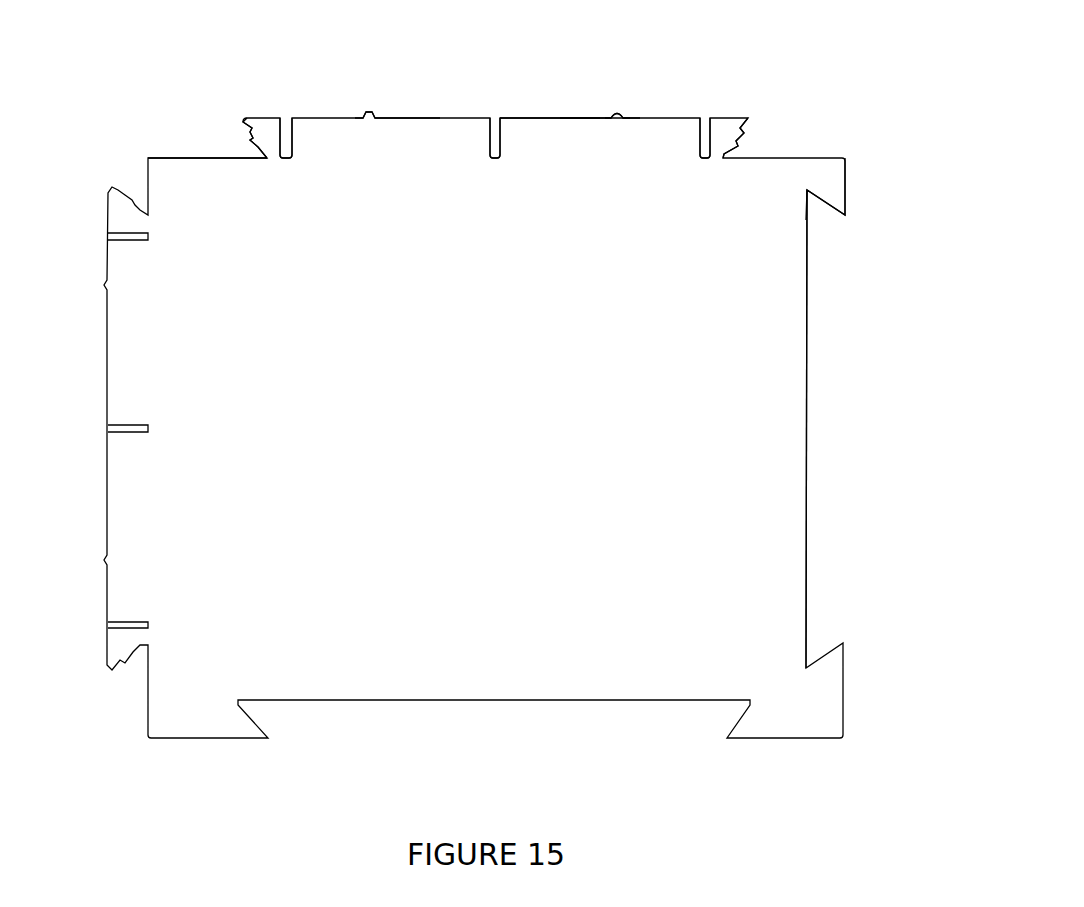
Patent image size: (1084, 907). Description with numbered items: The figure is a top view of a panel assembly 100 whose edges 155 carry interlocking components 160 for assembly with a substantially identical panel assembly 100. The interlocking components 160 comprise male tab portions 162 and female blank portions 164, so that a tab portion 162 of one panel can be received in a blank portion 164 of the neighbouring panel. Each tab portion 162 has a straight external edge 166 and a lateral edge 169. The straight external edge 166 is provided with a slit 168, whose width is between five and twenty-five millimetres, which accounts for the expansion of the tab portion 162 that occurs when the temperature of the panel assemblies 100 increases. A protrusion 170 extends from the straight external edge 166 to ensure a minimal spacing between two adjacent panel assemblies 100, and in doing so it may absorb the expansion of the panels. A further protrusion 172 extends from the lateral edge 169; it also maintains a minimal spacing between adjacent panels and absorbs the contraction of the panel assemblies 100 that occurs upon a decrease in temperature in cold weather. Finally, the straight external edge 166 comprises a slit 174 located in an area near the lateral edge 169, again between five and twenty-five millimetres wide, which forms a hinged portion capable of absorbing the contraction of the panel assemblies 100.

The panel assembly 100 is at (140, 106).
The edge 155 is at (432, 118).
The interlocking component 160 is at (827, 187).
The tab portion 162 is at (598, 92).
The blank portion 164 is at (850, 393).
The straight external edge 166 is at (542, 118).
The slit 168 is at (495, 118).
The lateral edge 169 is at (243, 126).
The protrusion 170 is at (622, 116).
The protrusion 172 is at (250, 140).
The slit 174 is at (287, 118).